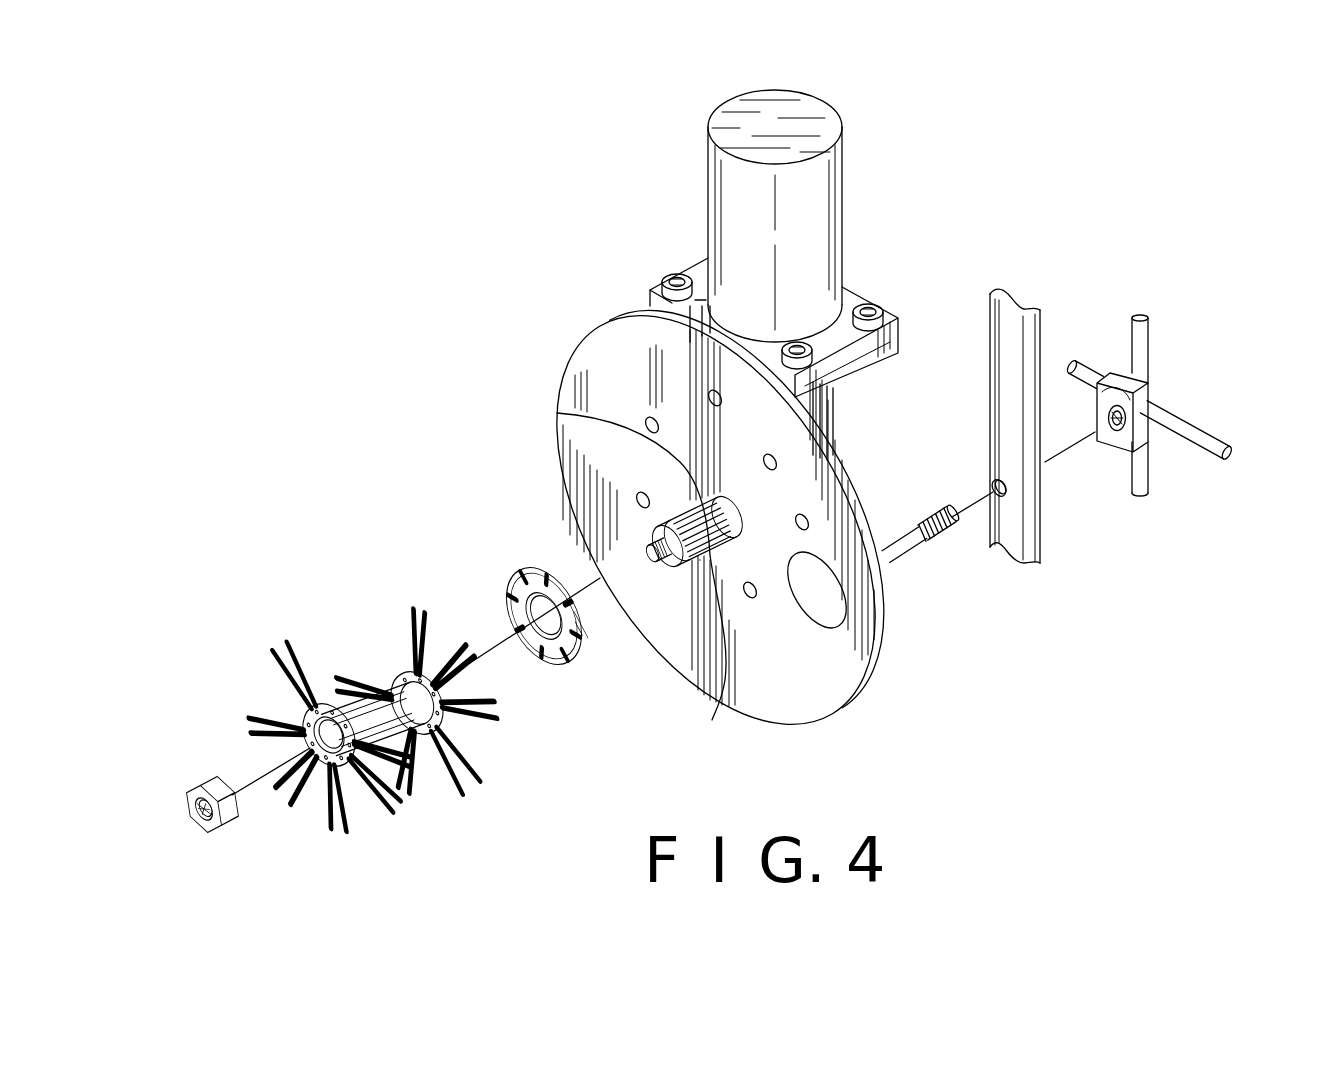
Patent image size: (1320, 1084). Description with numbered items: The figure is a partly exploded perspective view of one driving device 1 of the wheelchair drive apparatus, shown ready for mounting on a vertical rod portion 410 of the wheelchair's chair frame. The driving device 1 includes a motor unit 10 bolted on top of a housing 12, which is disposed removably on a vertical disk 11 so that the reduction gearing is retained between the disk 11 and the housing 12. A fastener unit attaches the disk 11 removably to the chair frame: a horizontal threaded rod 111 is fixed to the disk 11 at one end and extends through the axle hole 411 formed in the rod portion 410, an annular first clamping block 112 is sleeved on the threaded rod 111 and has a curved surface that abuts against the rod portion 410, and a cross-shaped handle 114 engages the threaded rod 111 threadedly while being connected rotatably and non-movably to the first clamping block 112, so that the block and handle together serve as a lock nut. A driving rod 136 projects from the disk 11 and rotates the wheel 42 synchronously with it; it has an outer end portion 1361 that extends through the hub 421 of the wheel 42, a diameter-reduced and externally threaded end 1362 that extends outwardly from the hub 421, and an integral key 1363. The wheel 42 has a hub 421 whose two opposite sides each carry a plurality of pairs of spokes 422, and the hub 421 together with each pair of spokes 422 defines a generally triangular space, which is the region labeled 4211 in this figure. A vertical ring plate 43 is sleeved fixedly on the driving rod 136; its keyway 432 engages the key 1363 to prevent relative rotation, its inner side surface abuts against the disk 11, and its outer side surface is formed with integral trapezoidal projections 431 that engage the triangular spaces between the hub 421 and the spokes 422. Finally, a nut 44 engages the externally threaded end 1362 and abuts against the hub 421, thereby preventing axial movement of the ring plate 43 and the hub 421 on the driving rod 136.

The driving device 1 is at (552, 270).
The motor unit 10 is at (832, 220).
The vertical disk 11 is at (679, 520).
The housing 12 is at (843, 410).
The horizontal threaded rod 111 is at (915, 565).
The annular first clamping block 112 is at (1118, 387).
The cross-shaped handle 114 is at (1190, 423).
The driving rod 136 is at (616, 625).
The outer end portion 1361 is at (715, 622).
The diameter-reduced and externally threaded end 1362 is at (633, 598).
The integral key 1363 is at (560, 407).
The vertical rod portion 410 is at (1032, 425).
The axle hole 411 is at (1001, 500).
The wheel 42 is at (271, 639).
The hub 421 is at (415, 765).
The spokes 422 is at (350, 642).
The hub 4211 is at (445, 688).
The vertical ring plate 43 is at (497, 583).
The integral trapezoidal projections 431 is at (507, 625).
The keyway 432 is at (518, 598).
The nut 44 is at (230, 815).